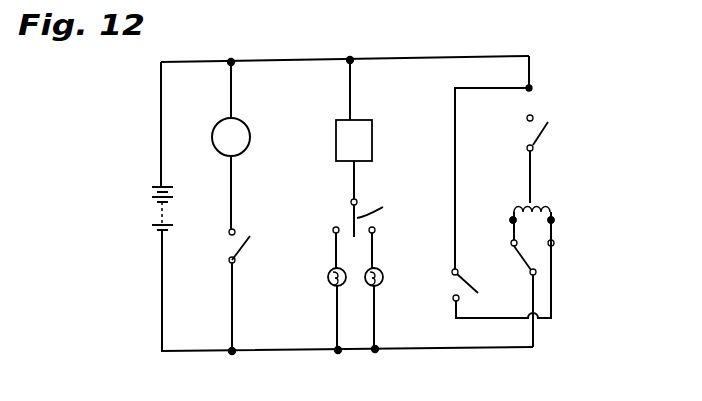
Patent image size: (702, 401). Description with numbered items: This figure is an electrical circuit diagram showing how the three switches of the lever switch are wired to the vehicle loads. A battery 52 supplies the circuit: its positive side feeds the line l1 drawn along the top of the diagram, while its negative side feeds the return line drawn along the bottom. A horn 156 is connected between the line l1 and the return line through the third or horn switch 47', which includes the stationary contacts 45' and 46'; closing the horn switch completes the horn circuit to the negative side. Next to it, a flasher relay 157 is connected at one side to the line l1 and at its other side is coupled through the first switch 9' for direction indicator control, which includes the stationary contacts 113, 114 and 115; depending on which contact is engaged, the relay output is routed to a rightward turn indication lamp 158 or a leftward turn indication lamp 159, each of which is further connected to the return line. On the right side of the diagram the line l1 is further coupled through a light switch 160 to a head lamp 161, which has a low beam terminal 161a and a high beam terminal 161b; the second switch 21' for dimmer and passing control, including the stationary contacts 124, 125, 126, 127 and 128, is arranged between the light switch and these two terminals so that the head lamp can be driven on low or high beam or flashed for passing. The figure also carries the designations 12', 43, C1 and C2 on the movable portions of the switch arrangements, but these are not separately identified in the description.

The line l1 is at (262, 62).
The battery 52 is at (152, 212).
The horn 156 is at (246, 128).
The flasher relay 157 is at (372, 122).
The stationary contact 114 is at (351, 200).
The stationary contact 113 is at (334, 229).
The stationary contact 115 is at (376, 230).
The first switch 9' is at (397, 172).
The movable contact 12' is at (392, 196).
The stationary contact 45' is at (209, 212).
The movable switch arm 43 is at (250, 236).
The stationary contact 46' is at (256, 282).
The third or horn switch 47' is at (200, 286).
The rightward turn indication lamp 158 is at (330, 283).
The leftward turn indication lamp 159 is at (383, 282).
The light switch 160 is at (543, 134).
The head lamp 161 is at (537, 202).
The low beam terminal 161a is at (511, 219).
The high beam terminal 161b is at (554, 219).
The stationary contact 128 is at (513, 240).
The stationary contact 126 is at (555, 243).
The stationary contact 127 is at (536, 276).
The contact C2 is at (530, 257).
The stationary contact 124 is at (452, 273).
The contact C1 is at (469, 279).
The stationary contact 125 is at (457, 302).
The second switch 21' is at (627, 270).